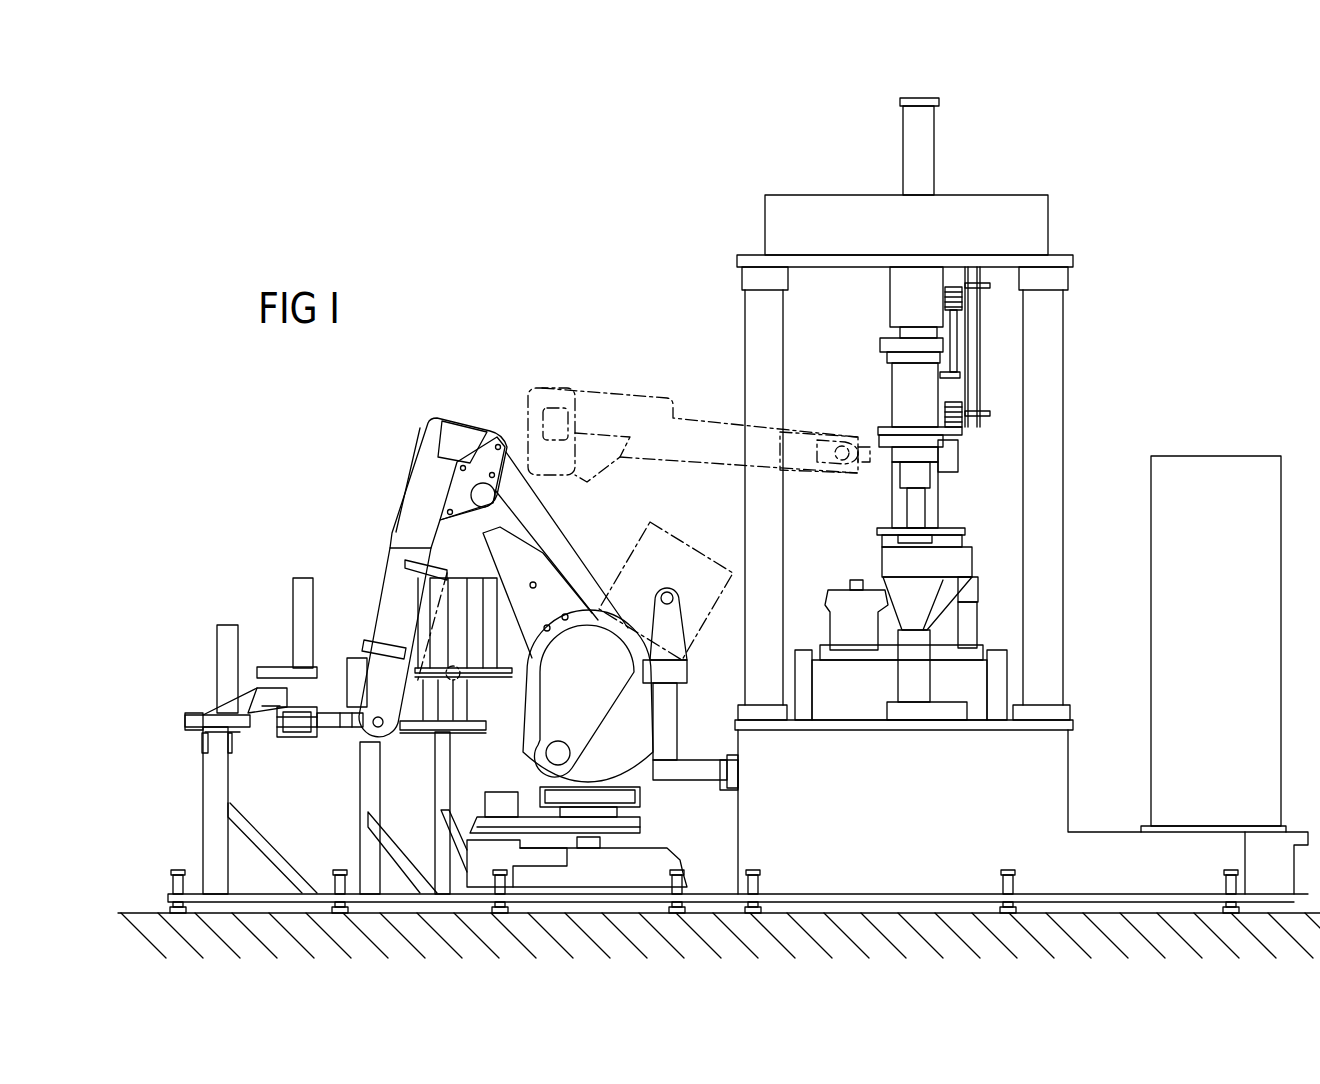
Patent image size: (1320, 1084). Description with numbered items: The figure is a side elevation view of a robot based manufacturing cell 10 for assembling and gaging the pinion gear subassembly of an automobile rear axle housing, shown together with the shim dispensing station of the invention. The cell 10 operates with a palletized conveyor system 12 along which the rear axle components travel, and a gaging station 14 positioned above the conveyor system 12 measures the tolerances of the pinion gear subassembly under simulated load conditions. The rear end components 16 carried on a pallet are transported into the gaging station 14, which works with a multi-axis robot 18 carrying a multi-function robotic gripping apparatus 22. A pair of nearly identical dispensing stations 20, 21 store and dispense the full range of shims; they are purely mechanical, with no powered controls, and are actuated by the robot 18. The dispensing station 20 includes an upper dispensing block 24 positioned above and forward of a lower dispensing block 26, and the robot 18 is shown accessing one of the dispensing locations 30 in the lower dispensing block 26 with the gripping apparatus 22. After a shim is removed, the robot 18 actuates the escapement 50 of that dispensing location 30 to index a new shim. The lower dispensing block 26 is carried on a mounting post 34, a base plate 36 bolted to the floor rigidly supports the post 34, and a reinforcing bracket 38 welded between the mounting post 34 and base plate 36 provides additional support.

The robot based manufacturing cell 10 is at (658, 266).
The palletized conveyor system 12 is at (1087, 776).
The gaging station 14 is at (1003, 373).
The rear end components 16 is at (848, 551).
The multi-axis robot 18 is at (425, 470).
The dispensing station 20 is at (189, 668).
The dispensing station 21 is at (398, 700).
The multi-function robotic gripping apparatus 22 is at (322, 723).
The upper dispensing block 24 is at (323, 627).
The lower dispensing block 26 is at (194, 693).
The dispensing location 30 is at (266, 743).
The mounting post 34 is at (215, 782).
The base plate 36 is at (200, 893).
The reinforcing bracket 38 is at (275, 860).
The escapement 50 is at (264, 708).